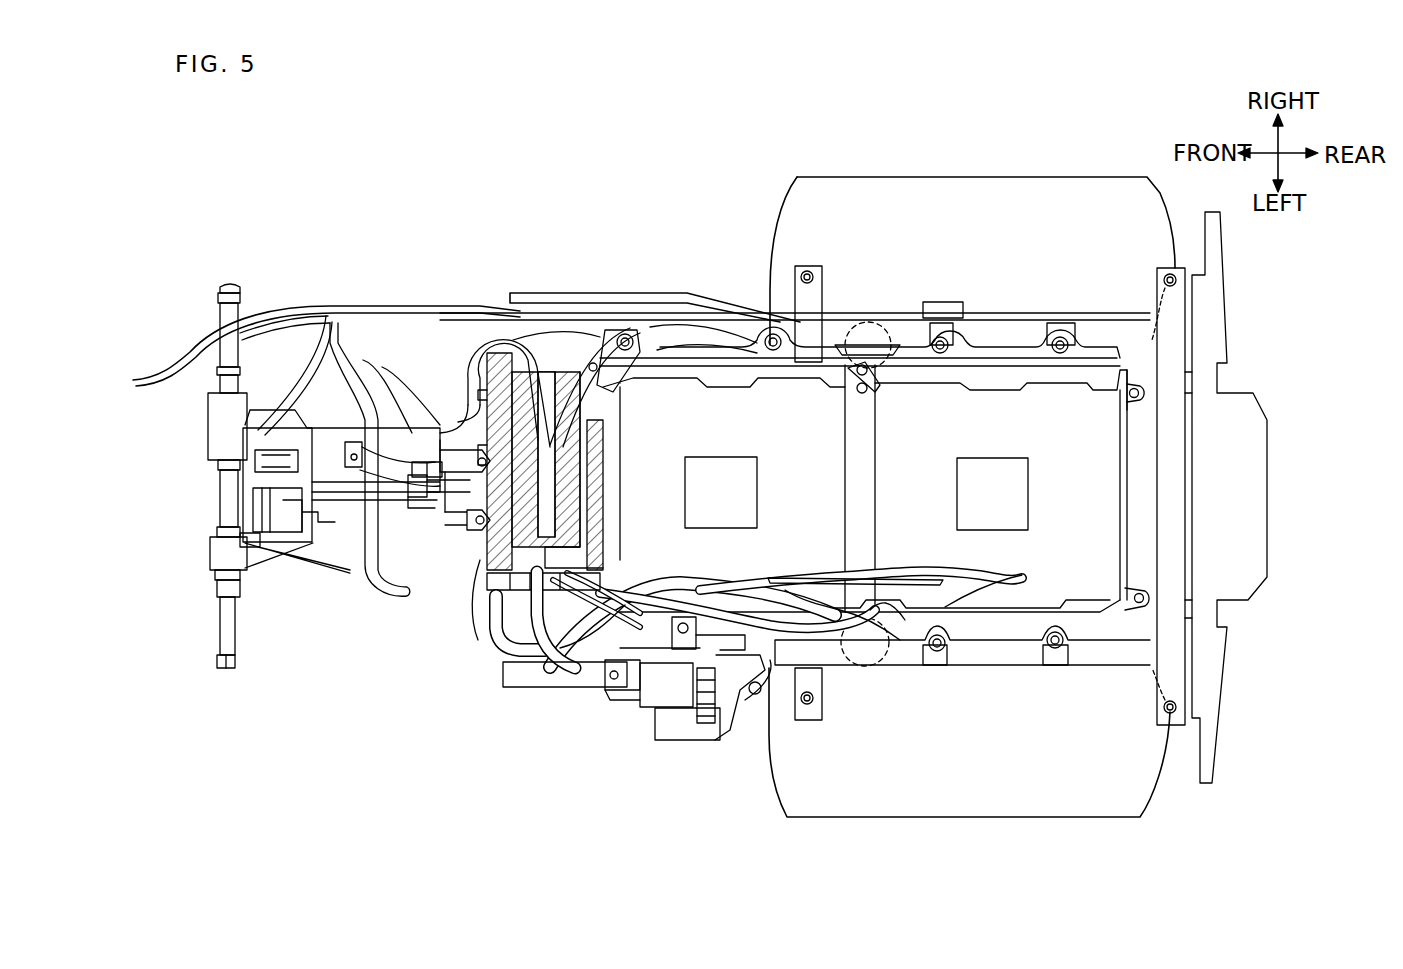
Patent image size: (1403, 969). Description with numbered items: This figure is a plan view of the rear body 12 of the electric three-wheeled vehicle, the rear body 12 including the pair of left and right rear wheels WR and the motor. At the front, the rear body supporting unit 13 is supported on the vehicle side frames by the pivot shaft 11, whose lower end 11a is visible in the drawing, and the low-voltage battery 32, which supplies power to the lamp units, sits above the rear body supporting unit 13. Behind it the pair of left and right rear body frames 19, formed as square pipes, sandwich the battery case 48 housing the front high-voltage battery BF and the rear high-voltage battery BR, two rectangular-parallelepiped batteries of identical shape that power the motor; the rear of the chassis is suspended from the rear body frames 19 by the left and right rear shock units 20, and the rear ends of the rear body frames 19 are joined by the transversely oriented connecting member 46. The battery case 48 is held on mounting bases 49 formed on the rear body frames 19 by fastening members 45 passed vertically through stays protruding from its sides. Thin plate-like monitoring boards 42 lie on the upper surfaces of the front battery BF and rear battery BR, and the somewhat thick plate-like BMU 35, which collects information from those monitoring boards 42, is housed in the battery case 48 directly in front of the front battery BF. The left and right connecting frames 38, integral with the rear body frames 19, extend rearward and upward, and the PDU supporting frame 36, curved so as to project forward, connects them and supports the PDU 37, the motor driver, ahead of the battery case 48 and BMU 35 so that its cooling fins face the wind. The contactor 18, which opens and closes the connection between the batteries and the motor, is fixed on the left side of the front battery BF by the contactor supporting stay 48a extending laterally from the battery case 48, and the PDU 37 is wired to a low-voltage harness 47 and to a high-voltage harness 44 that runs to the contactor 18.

The pivot shaft 11 is at (225, 629).
The lower end of steering shaft 11a is at (228, 670).
The rear body 12 is at (683, 210).
The rear body supporting unit 13 is at (318, 540).
The contactor 18 is at (652, 730).
The rear body frames 19 is at (1013, 337).
The rear shock units 20 is at (878, 340).
The low-voltage battery 32 is at (250, 488).
The BMU 35 is at (555, 370).
The PDU supporting frame 36 is at (522, 648).
The PDU 37 is at (470, 548).
The connecting frames 38 is at (545, 688).
The monitoring boards 42 is at (718, 470).
The high-voltage harness 44 is at (495, 612).
The fastening members 45 is at (625, 342).
The connecting member 46 is at (1175, 338).
The low-voltage harness 47 is at (440, 310).
The battery case 48 is at (1125, 566).
The contactor supporting stay 48a is at (605, 650).
The mounting bases 49 is at (942, 338).
The front high-voltage battery BF is at (655, 425).
The rear high-voltage battery BR is at (1175, 446).
The rear wheels WR is at (842, 200).